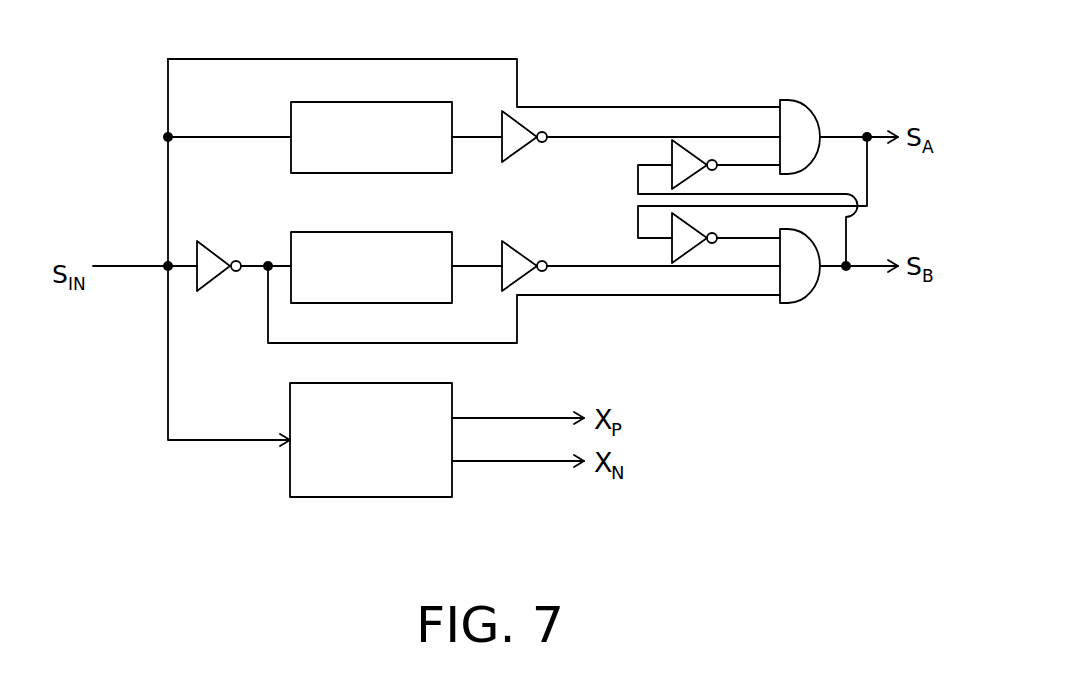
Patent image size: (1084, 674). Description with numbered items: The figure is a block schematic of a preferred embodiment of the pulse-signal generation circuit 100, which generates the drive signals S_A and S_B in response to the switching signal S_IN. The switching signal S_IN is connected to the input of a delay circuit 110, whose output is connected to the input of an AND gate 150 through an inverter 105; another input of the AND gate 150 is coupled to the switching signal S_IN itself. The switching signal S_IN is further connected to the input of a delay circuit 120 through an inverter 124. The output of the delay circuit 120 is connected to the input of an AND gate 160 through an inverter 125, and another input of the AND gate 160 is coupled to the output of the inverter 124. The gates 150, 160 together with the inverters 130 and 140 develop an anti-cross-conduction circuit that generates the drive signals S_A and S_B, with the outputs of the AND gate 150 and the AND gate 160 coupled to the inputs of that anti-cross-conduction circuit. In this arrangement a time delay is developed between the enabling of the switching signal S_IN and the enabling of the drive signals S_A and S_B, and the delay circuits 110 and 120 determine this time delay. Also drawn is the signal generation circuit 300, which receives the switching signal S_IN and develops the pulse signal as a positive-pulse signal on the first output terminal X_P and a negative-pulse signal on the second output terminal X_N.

The pulse-signal generation circuit 100 is at (905, 26).
The inverter 105 is at (513, 147).
The delay circuit 110 is at (443, 166).
The delay circuit 120 is at (355, 240).
The inverter 124 is at (207, 270).
The inverter 125 is at (515, 262).
The inverter 130 is at (714, 160).
The inverter 140 is at (717, 242).
The AND gate 150 is at (798, 118).
The AND gate 160 is at (800, 278).
The signal generation circuit 300 is at (438, 472).